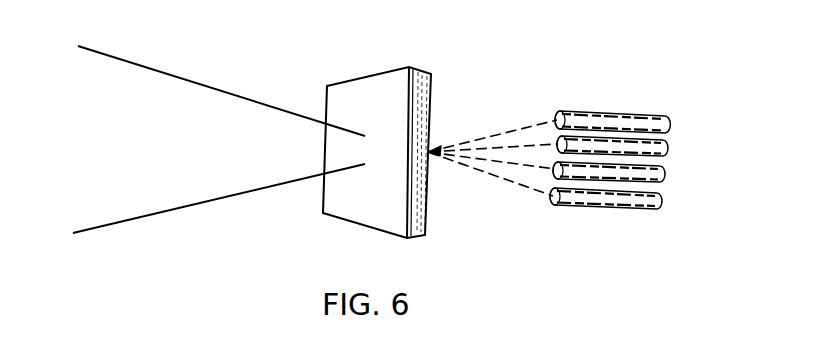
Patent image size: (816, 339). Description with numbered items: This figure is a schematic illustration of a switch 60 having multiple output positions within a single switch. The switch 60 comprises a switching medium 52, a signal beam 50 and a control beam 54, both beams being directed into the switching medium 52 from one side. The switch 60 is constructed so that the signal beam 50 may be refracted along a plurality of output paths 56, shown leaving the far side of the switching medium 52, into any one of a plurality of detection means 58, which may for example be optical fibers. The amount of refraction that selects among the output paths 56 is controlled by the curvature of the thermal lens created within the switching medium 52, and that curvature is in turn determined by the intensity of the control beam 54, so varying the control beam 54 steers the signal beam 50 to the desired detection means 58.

The signal beam 50 is at (185, 80).
The switching medium 52 is at (357, 78).
The control beam 54 is at (170, 210).
The output paths 56 is at (530, 188).
The detection means 58 is at (657, 146).
The switch 60 is at (330, 64).